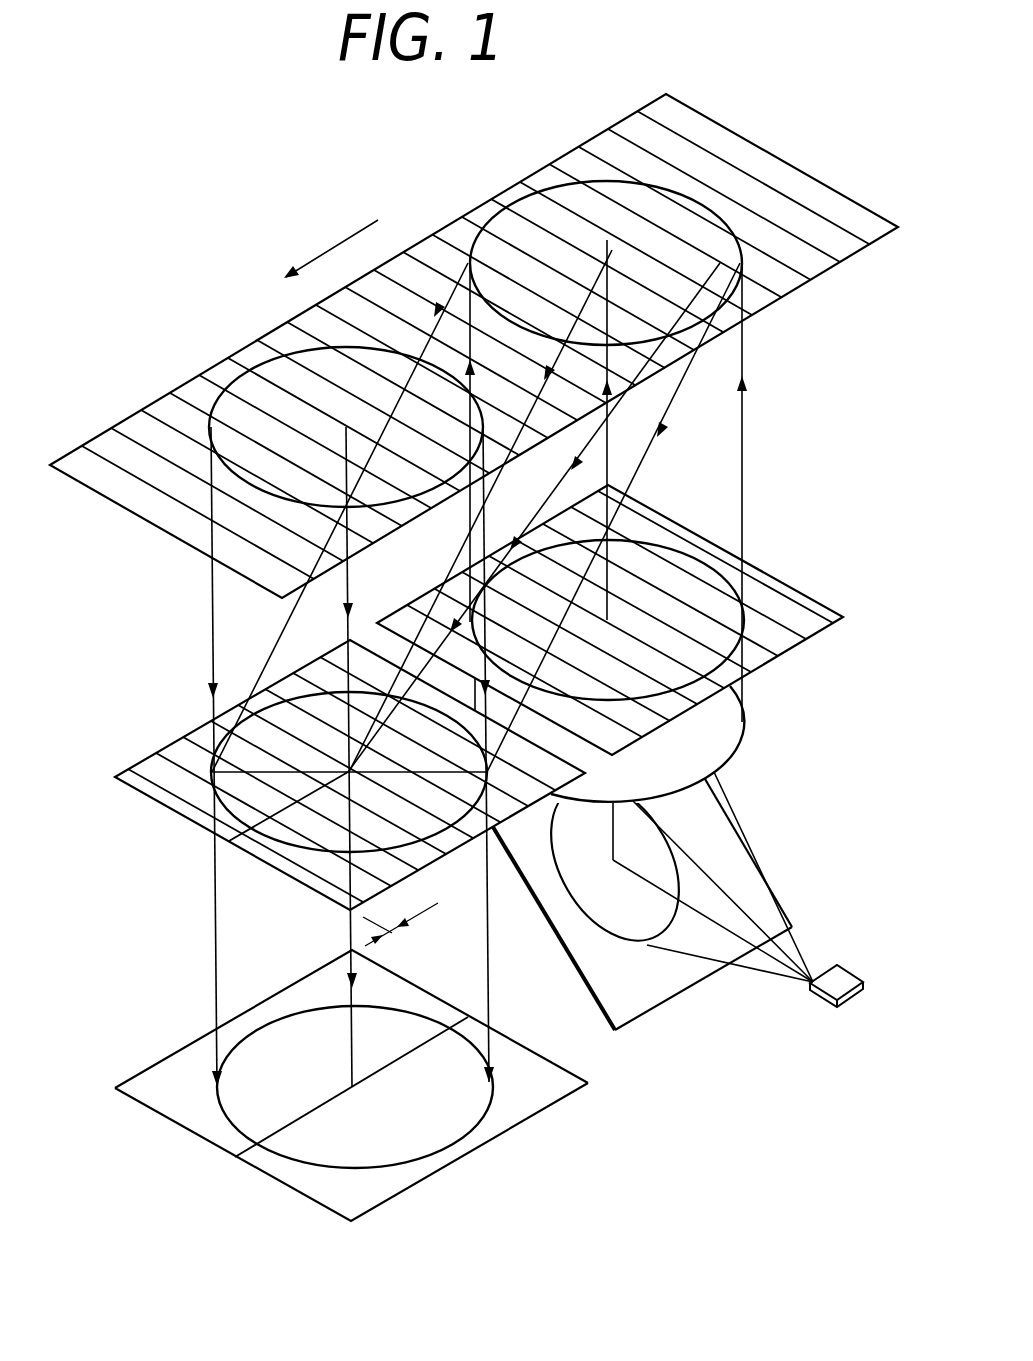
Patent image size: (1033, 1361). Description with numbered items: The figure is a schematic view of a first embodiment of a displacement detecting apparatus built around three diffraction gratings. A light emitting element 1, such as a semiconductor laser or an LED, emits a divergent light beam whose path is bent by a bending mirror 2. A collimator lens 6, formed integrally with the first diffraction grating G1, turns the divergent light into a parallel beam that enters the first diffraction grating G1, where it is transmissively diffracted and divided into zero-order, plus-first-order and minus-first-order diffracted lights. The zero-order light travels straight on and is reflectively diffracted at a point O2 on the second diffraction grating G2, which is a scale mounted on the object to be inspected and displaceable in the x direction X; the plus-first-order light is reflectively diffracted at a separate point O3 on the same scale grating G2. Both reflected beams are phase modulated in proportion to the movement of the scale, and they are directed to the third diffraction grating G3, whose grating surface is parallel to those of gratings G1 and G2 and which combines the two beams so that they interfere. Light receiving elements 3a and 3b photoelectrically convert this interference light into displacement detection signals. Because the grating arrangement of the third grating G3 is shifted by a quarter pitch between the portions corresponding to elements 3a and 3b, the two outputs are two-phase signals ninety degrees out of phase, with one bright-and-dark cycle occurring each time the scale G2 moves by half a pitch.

The light emitting element 1 is at (846, 965).
The bending mirror 2 is at (760, 863).
The light receiving element 3a is at (197, 1118).
The light receiving element 3b is at (315, 1192).
The collimator lens 6 is at (748, 706).
The first diffraction grating G1 is at (780, 583).
The second diffraction grating G2 is at (474, 337).
The third diffraction grating G3 is at (180, 818).
The point on second diffraction grating O2 is at (548, 180).
The point on second diffraction grating O3 is at (258, 350).
The x direction X is at (331, 243).